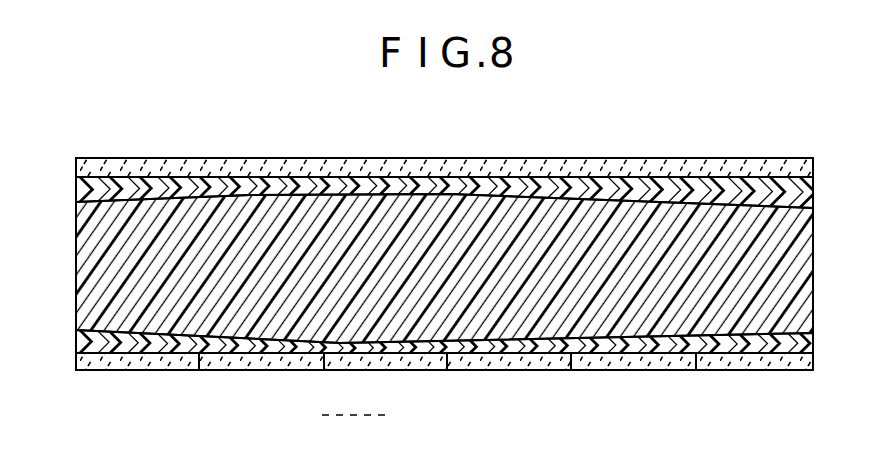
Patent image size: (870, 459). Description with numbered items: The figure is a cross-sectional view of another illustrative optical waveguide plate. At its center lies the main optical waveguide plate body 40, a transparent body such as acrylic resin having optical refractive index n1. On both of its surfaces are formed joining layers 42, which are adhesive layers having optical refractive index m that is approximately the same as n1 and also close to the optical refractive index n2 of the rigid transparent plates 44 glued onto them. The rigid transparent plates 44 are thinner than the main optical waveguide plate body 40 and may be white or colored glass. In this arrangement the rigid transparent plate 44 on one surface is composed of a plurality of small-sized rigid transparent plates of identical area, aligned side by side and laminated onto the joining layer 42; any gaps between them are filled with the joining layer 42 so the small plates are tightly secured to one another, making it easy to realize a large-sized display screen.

The main optical waveguide plate body 40 is at (813, 267).
The joining layer 42 is at (212, 183).
The rigid transparent plate 44 is at (300, 173).
The optical refractive index of the main optical waveguide plate body n1 is at (76, 268).
The optical refractive index of the rigid transparent plate n2 is at (838, 363).
The optical refractive index of the joining layer m is at (76, 195).